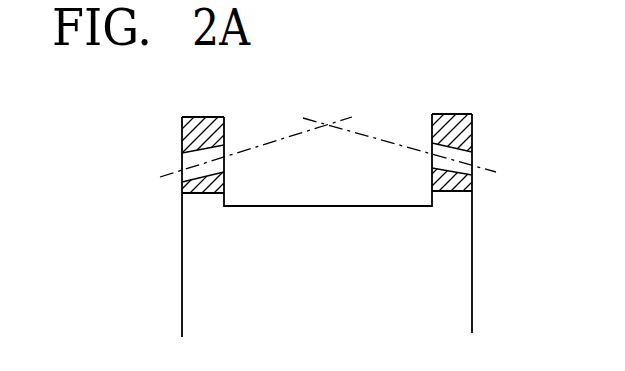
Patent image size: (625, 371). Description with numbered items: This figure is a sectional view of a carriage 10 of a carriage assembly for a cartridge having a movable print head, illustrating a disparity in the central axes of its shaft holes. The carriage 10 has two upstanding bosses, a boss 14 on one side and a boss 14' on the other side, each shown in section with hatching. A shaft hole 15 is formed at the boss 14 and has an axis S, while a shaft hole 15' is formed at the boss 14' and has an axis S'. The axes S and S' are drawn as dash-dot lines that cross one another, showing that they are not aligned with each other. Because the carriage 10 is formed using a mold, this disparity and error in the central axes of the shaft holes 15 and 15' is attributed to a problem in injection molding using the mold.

The carriage 10 is at (138, 283).
The boss 14 is at (203, 125).
The boss 14' is at (452, 123).
The shaft hole 15 is at (168, 163).
The shaft hole 15' is at (492, 159).
The axis S is at (256, 131).
The axis S' is at (399, 128).